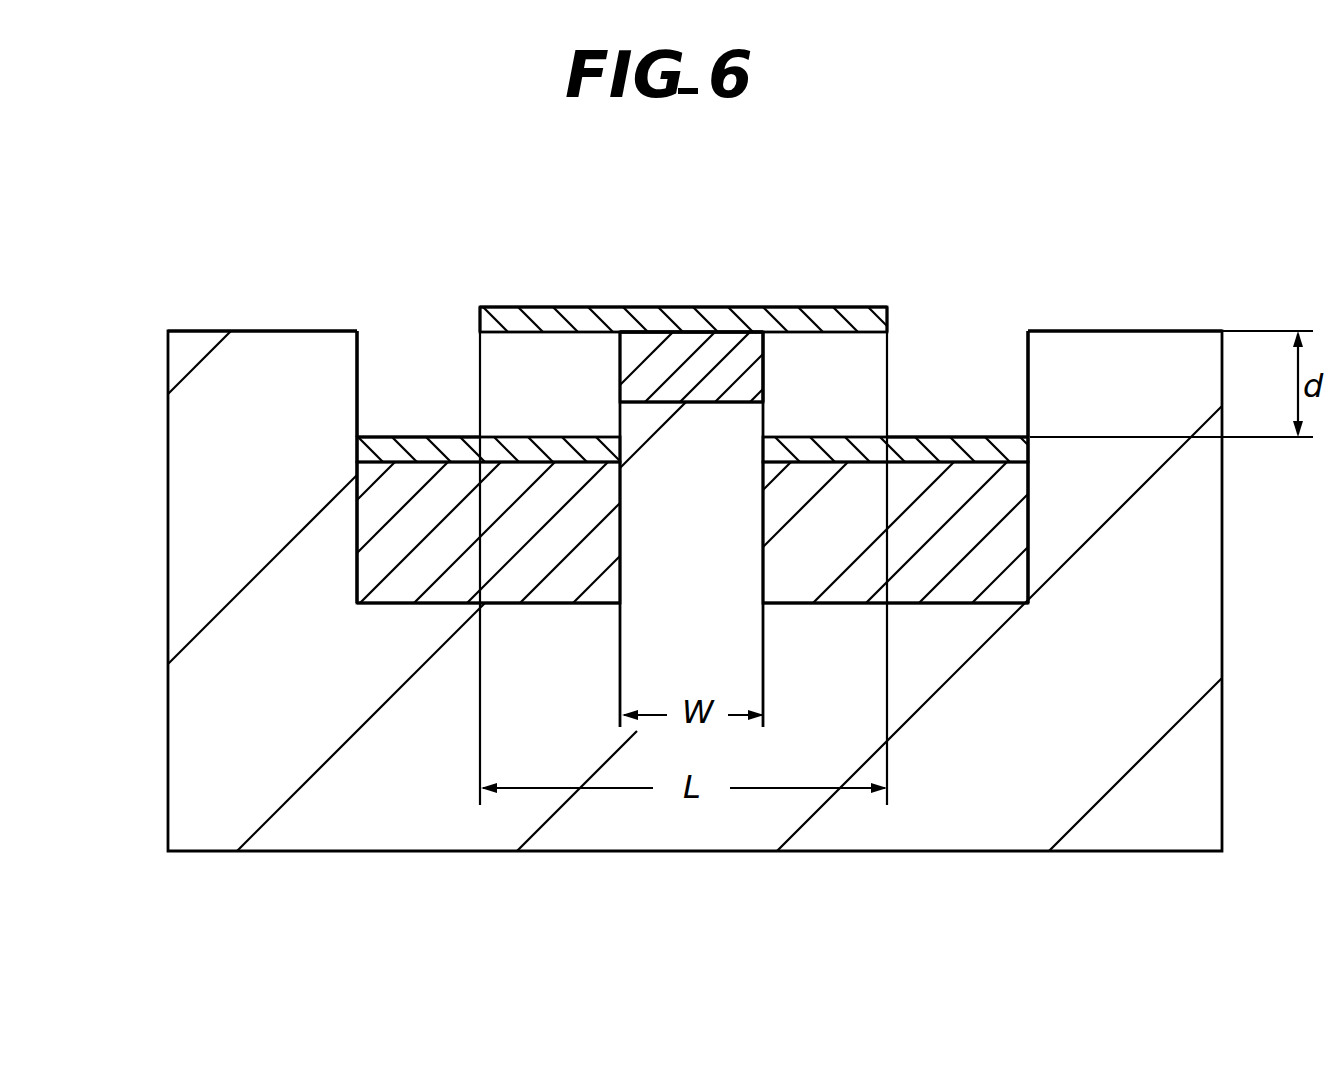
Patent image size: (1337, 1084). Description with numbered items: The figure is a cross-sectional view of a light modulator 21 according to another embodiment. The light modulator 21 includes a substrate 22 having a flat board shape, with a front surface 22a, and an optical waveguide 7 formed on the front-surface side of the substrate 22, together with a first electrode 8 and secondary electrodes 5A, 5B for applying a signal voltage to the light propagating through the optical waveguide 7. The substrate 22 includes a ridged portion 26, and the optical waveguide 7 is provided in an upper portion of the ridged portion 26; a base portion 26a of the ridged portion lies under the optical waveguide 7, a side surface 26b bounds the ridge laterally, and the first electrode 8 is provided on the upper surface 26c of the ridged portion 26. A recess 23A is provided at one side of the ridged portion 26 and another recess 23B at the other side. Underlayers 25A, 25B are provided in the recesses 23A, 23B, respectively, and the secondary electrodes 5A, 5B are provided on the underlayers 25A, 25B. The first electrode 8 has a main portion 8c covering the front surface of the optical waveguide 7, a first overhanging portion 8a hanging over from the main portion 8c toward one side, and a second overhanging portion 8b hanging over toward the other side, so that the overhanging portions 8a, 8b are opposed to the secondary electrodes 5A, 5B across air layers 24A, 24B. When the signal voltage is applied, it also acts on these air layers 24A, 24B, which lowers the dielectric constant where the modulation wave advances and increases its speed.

The light modulator 21 is at (1191, 308).
The substrate 22 is at (1175, 568).
The substrate top surface 22a is at (1108, 331).
The recess 23A is at (358, 347).
The recess 23B is at (1028, 368).
The air layer 24A is at (398, 390).
The air layer 24B is at (947, 383).
The underlayer 25A is at (537, 495).
The underlayer 25B is at (987, 498).
The secondary electrode 5A is at (437, 435).
The secondary electrode 5B is at (903, 437).
The optical waveguide 7 is at (636, 348).
The first electrode 8 is at (802, 288).
The first overhanging portion 8a is at (555, 306).
The second overhanging portion 8b is at (851, 312).
The main portion 8c is at (673, 308).
The ridged portion 26 is at (741, 326).
The base portion 26a is at (733, 427).
The side surface of projection 26b is at (765, 348).
The upper surface 26c is at (698, 330).